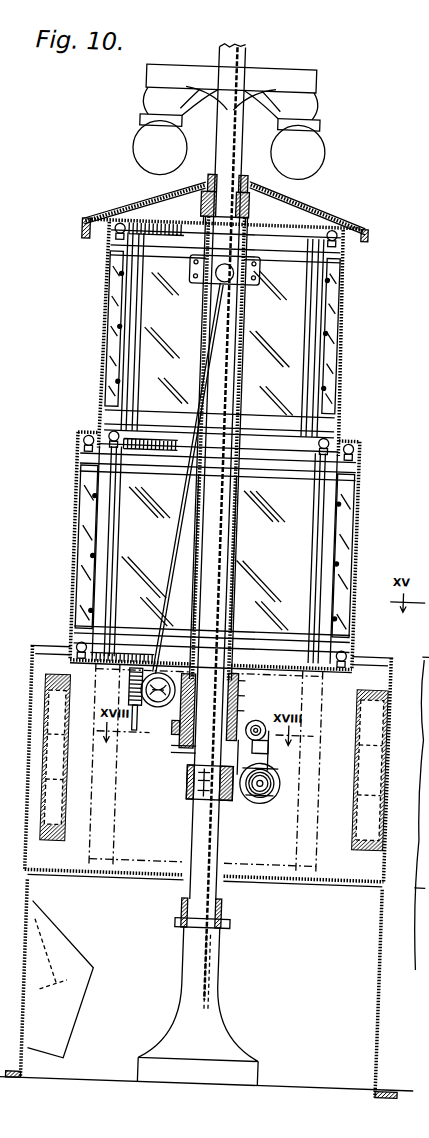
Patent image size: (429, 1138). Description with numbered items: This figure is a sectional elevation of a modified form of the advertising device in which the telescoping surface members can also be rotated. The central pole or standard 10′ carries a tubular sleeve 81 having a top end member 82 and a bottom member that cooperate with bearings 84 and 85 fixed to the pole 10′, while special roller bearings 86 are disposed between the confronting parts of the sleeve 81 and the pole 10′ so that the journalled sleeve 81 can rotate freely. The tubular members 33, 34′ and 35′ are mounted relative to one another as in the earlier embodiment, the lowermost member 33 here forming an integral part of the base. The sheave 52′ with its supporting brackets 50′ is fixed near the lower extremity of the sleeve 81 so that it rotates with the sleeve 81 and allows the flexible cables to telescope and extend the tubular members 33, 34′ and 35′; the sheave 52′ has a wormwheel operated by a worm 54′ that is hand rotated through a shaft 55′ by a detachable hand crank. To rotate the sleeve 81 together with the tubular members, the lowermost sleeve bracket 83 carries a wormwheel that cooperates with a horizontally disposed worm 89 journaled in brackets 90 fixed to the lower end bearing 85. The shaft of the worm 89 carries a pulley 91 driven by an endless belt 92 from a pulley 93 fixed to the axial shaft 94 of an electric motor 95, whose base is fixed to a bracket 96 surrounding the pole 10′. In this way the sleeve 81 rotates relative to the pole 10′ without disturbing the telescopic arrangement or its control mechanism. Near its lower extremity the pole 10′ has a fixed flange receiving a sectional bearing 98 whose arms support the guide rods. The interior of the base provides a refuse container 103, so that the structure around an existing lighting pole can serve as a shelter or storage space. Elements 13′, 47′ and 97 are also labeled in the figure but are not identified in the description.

The central pole or standard 10′ is at (225, 362).
The lamp globes 13′ is at (126, 148).
The tubular member 33 is at (400, 654).
The tubular member 34′ is at (370, 458).
The tubular member 35′ is at (320, 242).
The roof 47′ is at (326, 214).
The supporting bracket 50′ is at (190, 677).
The sheave 52′ is at (172, 673).
The worm 54′ is at (142, 686).
The shaft 55′ is at (148, 734).
The tubular sleeve 81 is at (243, 383).
The top end member 82 is at (245, 205).
The lowermost sleeve bracket 83 is at (253, 717).
The bearing 84 is at (238, 184).
The bearing 85 is at (192, 750).
The roller bearings 86 is at (245, 199).
The worm 89 is at (269, 721).
The brackets 90 is at (280, 749).
The pulley 91 is at (277, 717).
The endless belt 92 is at (285, 765).
The pulley 93 is at (281, 797).
The axial shaft 94 is at (270, 791).
The electric motor 95 is at (286, 791).
The bracket 96 is at (236, 793).
The pedestal 97 is at (229, 932).
The sectional bearing 98 is at (248, 910).
The refuse container 103 is at (103, 985).